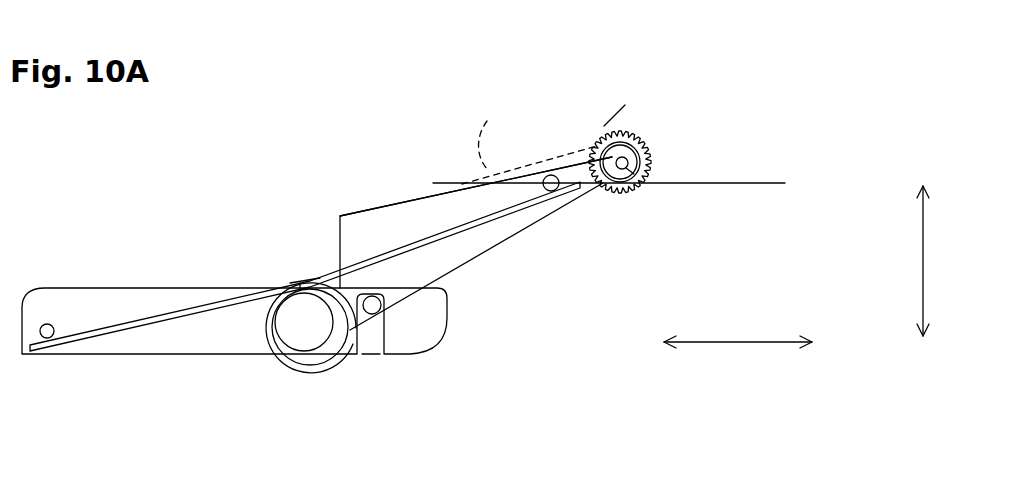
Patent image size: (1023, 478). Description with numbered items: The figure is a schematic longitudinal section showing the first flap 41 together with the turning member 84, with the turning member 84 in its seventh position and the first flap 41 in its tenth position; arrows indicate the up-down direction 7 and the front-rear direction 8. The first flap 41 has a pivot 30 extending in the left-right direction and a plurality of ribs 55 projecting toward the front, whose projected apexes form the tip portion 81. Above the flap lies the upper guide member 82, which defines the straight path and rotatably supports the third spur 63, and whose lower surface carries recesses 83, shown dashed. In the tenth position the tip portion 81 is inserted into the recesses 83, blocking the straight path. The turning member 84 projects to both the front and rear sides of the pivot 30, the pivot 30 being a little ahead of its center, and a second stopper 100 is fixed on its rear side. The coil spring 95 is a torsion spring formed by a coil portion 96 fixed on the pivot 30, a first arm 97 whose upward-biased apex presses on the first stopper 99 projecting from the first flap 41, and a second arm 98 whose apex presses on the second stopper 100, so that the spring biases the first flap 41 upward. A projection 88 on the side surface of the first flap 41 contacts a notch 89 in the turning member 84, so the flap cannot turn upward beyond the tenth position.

The up-down direction 7 is at (923, 252).
The front-rear direction 8 is at (718, 342).
The pivot 30 is at (299, 333).
The first flap 41 is at (358, 232).
The ribs 55 is at (410, 220).
The third spur 63 is at (648, 152).
The tip portion 81 is at (604, 126).
The upper guide member 82 is at (738, 184).
The recesses 83 is at (529, 136).
The turning member 84 is at (140, 287).
The projection 88 is at (378, 292).
The notch 89 is at (370, 348).
The coil spring 95 is at (297, 275).
The coil portion 96 is at (262, 288).
The first arm 97 is at (522, 208).
The second arm 98 is at (150, 327).
The first stopper 99 is at (551, 175).
The second stopper 100 is at (42, 326).